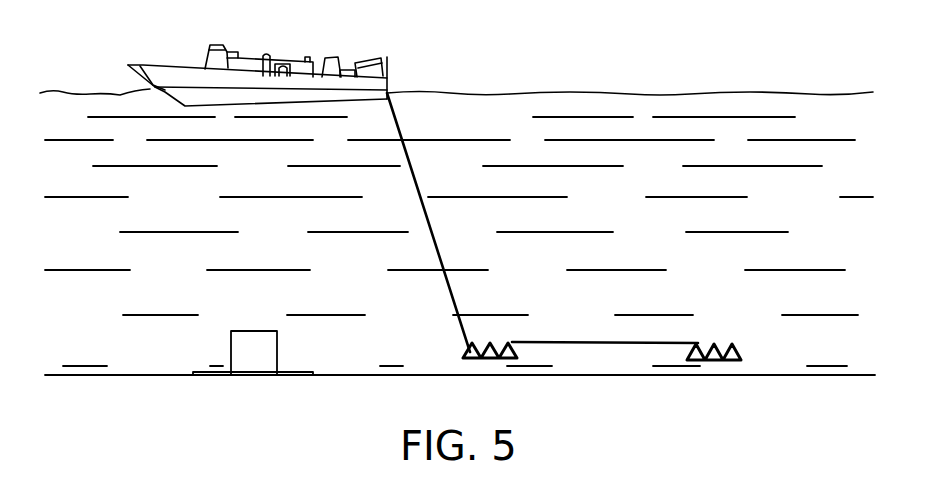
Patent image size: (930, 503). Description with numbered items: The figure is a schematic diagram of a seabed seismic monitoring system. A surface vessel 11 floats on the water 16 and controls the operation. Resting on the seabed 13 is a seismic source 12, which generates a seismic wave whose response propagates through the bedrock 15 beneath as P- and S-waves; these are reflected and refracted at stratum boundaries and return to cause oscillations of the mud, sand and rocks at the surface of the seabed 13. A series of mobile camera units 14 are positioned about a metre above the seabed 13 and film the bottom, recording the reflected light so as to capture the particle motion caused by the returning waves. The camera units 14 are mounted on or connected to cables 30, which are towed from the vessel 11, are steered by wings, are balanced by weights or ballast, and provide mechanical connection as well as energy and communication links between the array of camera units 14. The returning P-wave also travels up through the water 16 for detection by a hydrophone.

The surface vessel 11 is at (166, 63).
The seismic source 12 is at (230, 347).
The seabed 13 is at (645, 377).
The mobile camera units 14 is at (463, 351).
The bedrock 15 is at (731, 412).
The water 16 is at (190, 211).
The cables 30 is at (428, 212).